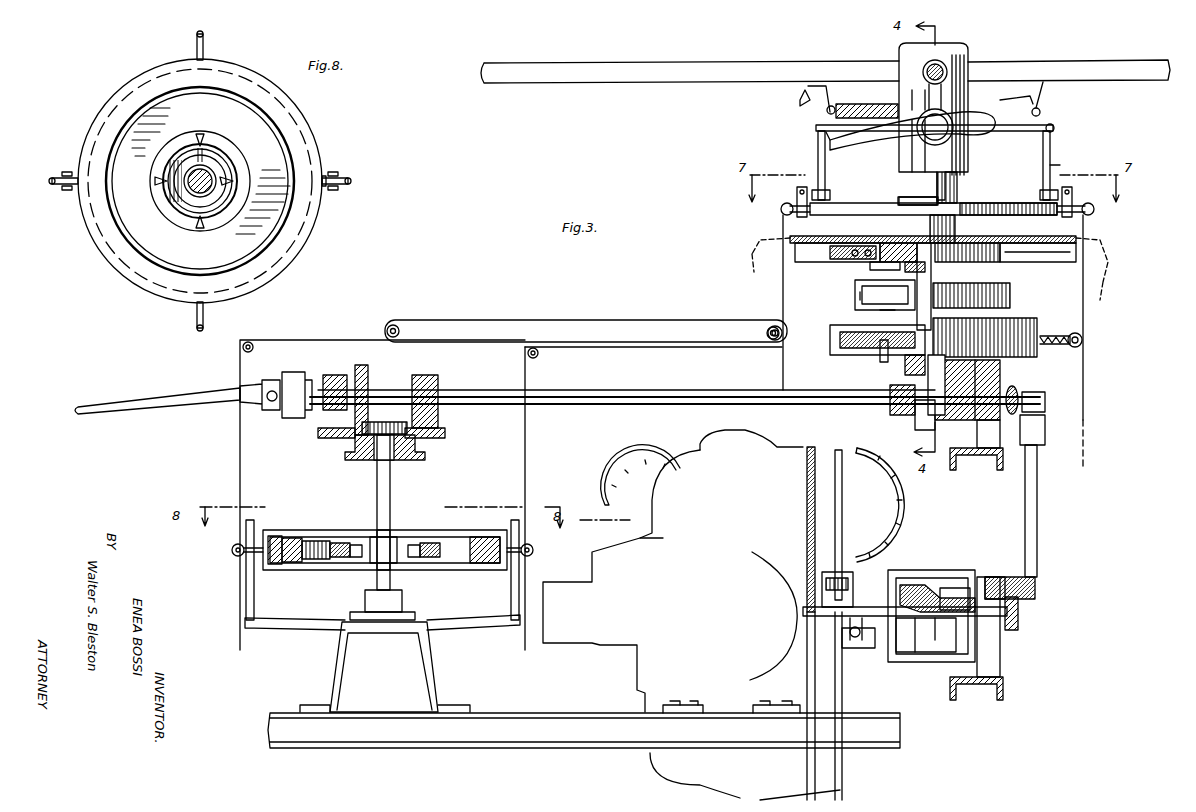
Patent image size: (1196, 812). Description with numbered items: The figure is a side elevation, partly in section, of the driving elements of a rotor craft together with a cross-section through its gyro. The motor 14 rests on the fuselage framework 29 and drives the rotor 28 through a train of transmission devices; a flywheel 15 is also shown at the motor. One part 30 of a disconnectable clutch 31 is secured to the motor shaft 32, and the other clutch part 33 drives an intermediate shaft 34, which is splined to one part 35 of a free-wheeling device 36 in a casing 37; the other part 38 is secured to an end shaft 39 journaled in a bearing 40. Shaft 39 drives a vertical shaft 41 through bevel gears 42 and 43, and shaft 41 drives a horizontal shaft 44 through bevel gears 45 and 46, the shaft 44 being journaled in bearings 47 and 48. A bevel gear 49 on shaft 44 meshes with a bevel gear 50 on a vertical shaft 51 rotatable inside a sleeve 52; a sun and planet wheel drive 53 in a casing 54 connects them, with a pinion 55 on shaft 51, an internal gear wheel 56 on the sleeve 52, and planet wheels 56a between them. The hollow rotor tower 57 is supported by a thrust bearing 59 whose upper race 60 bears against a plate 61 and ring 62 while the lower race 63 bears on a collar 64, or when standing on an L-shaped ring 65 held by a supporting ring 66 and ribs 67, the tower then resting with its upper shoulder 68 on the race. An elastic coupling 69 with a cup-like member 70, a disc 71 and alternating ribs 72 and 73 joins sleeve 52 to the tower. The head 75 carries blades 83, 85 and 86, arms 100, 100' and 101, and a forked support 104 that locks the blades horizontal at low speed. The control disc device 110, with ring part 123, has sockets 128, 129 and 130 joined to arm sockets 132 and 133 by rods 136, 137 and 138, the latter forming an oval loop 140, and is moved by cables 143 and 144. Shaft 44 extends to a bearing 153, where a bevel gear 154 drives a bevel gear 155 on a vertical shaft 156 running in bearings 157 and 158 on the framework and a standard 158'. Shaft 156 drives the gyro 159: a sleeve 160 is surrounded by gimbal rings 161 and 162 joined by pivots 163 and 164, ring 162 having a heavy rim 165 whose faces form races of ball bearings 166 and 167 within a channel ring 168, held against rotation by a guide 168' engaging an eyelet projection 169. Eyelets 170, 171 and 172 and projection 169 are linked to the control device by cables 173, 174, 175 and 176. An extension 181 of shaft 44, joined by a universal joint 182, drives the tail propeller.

In FIG. 3, the motor 14 is at (638, 671).
In FIG. 3, the flywheel 15 is at (850, 481).
In FIG. 3, the rotor 28 is at (1065, 110).
In FIG. 3, the fuselage framework 29 is at (768, 238).
In FIG. 3, the clutch part 30 is at (850, 590).
In FIG. 3, the disconnectable clutch 31 is at (861, 660).
In FIG. 3, the motor shaft 32 is at (822, 618).
In FIG. 3, the clutch part 33 is at (855, 600).
In FIG. 3, the intermediate shaft 34 is at (862, 645).
In FIG. 3, the free-wheeling device part 35 is at (922, 578).
In FIG. 3, the free-wheeling device 36 is at (935, 652).
In FIG. 3, the casing 37 is at (910, 662).
In FIG. 3, the free-wheeling device part 38 is at (958, 586).
In FIG. 3, the end shaft 39 is at (1002, 645).
In FIG. 3, the bearing 40 is at (995, 578).
In FIG. 3, the vertical shaft 41 is at (1038, 490).
In FIG. 3, the bevel gear 42 is at (1020, 620).
In FIG. 3, the bevel gear 43 is at (1036, 590).
In FIG. 3, the horizontal shaft 44 is at (698, 396).
In FIG. 3, the bevel gear 45 is at (1048, 408).
In FIG. 3, the bevel gear 46 is at (1020, 396).
In FIG. 3, the bearing 47 is at (1002, 380).
In FIG. 3, the bearing 48 is at (428, 374).
In FIG. 3, the bevel gear 49 is at (892, 412).
In FIG. 3, the bevel gear 50 is at (964, 387).
In FIG. 3, the vertical shaft 51 is at (937, 415).
In FIG. 3, the sleeve 52 is at (985, 337).
In FIG. 3, the sun and planet wheel drive 53 is at (1022, 312).
In FIG. 3, the casing 54 is at (1040, 350).
In FIG. 3, the pinion 55 is at (905, 360).
In FIG. 3, the internal gear wheel 56 is at (835, 330).
In FIG. 3, the planet wheels 56a is at (870, 352).
In FIG. 3, the rotor tower 57 is at (960, 192).
In FIG. 3, the thrust bearing 59 is at (960, 266).
In FIG. 3, the upper race 60 is at (888, 240).
In FIG. 3, the plate 61 is at (830, 243).
In FIG. 3, the ring 62 is at (860, 250).
In FIG. 3, the lower race 63 is at (890, 262).
In FIG. 3, the collar 64 is at (910, 270).
In FIG. 3, the L-shaped ring 65 is at (872, 268).
In FIG. 3, the supporting ring 66 is at (790, 250).
In FIG. 3, the ribs 67 is at (1058, 262).
In FIG. 3, the upper shoulder 68 is at (956, 230).
In FIG. 3, the elastic coupling 69 is at (1011, 294).
In FIG. 3, the cup-like member 70 is at (885, 317).
In FIG. 3, the disc 71 is at (855, 292).
In FIG. 3, the ribs 72 is at (885, 295).
In FIG. 3, the ribs 73 is at (862, 302).
In FIG. 3, the head 75 is at (962, 60).
In FIG. 3, the blade 83 is at (985, 130).
In FIG. 3, the blade 85 is at (1080, 62).
In FIG. 3, the blade 86 is at (668, 62).
In FIG. 3, the arm 100 is at (800, 151).
In FIG. 3, the arm 100' is at (896, 61).
In FIG. 3, the arm 101 is at (1052, 146).
In FIG. 3, the forked support 104 is at (806, 96).
In FIG. 3, the control disc device 110 is at (1015, 202).
In FIG. 3, the ring part 123 is at (1025, 216).
In FIG. 3, the ball bearing socket 128 is at (822, 198).
In FIG. 3, the ball bearing socket 129 is at (1072, 200).
In FIG. 3, the ball bearing socket 130 is at (915, 200).
In FIG. 3, the ball bearing socket 132 is at (814, 128).
In FIG. 3, the ball bearing socket 133 is at (1055, 129).
In FIG. 3, the ball-headed rod 136 is at (816, 140).
In FIG. 3, the ball-headed rod 137 is at (1052, 162).
In FIG. 3, the ball-headed rod 138 is at (962, 170).
In FIG. 3, the oval loop 140 is at (918, 132).
In FIG. 3, the cable 143 is at (782, 300).
In FIG. 3, the cable 144 is at (1084, 300).
In FIG. 3, the bearing 153 is at (335, 373).
In FIG. 3, the bevel gear 154 is at (360, 362).
In FIG. 3, the bevel gear 155 is at (373, 420).
In FIG. 8, the vertical shaft 156 is at (212, 168).
In FIG. 3, the vertical shaft 156 is at (392, 488).
In FIG. 3, the bearing 157 is at (362, 462).
In FIG. 3, the bearing 158 is at (397, 605).
In FIG. 3, the standard 158' is at (371, 667).
In FIG. 3, the gyro 159 is at (452, 524).
In FIG. 8, the sleeve 160 is at (167, 175).
In FIG. 3, the sleeve 160 is at (400, 538).
In FIG. 8, the gimbal ring 161 is at (215, 210).
In FIG. 3, the gimbal ring 161 is at (356, 560).
In FIG. 8, the gimbal ring 162 is at (272, 220).
In FIG. 3, the gimbal ring 162 is at (312, 566).
In FIG. 8, the pivots 163 is at (175, 205).
In FIG. 3, the pivots 163 is at (370, 540).
In FIG. 8, the pivots 164 is at (205, 140).
In FIG. 3, the heavy rim 165 is at (314, 540).
In FIG. 3, the ball bearing 166 is at (290, 538).
In FIG. 3, the ball bearing 167 is at (276, 563).
In FIG. 3, the ring 168 is at (359, 570).
In FIG. 8, the guide 168' is at (354, 189).
In FIG. 3, the guide 168' is at (489, 568).
In FIG. 8, the eyelet projection 169 is at (345, 175).
In FIG. 3, the eyelet projection 169 is at (534, 551).
In FIG. 8, the eyelet 170 is at (58, 186).
In FIG. 3, the eyelet 170 is at (232, 555).
In FIG. 8, the eyelet 171 is at (205, 42).
In FIG. 8, the eyelet 172 is at (205, 314).
In FIG. 3, the cable 173 is at (532, 345).
In FIG. 3, the cable 174 is at (588, 320).
In FIG. 3, the cable 175 is at (240, 630).
In FIG. 3, the cable 176 is at (518, 630).
In FIG. 3, the shaft extension 181 is at (158, 395).
In FIG. 3, the universal joint 182 is at (272, 418).